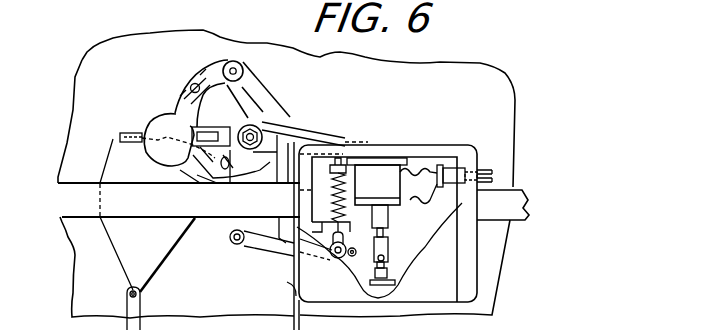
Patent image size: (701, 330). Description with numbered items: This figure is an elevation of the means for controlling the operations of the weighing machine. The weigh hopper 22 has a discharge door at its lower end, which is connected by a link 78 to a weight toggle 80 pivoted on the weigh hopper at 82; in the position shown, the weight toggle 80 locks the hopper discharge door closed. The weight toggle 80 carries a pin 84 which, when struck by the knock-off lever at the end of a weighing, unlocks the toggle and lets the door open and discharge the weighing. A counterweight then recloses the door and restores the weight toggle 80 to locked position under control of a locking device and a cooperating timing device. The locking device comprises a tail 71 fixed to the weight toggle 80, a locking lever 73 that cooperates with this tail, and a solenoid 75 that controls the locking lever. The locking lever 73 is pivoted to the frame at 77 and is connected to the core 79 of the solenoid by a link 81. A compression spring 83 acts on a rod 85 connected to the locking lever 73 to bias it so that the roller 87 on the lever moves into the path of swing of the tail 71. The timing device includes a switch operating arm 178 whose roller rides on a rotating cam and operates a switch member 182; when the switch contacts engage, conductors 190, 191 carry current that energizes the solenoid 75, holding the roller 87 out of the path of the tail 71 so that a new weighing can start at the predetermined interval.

The weigh hopper 22 is at (480, 71).
The tail 71 is at (297, 147).
The locking lever 73 is at (259, 242).
The solenoid 75 is at (369, 180).
The pivot 77 is at (347, 262).
The link 78 is at (285, 281).
The core 79 is at (382, 222).
The weight toggle 80 is at (268, 79).
The link 81 is at (388, 252).
The pivot 82 is at (258, 128).
The compression spring 83 is at (333, 183).
The pin 84 is at (125, 132).
The rod 85 is at (340, 158).
The roller 87 is at (231, 242).
The switch operating arm 178 is at (552, 329).
The switch member 182 is at (521, 320).
The conductor 190 is at (497, 178).
The conductor 191 is at (483, 168).